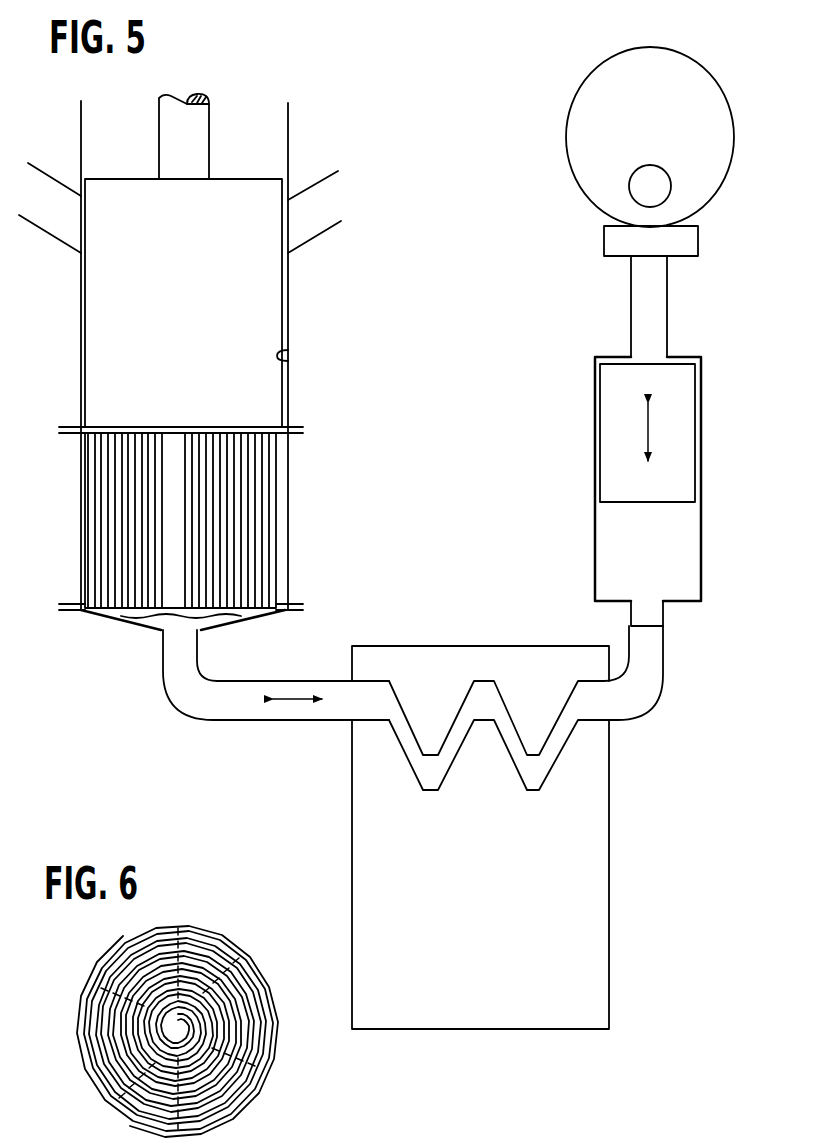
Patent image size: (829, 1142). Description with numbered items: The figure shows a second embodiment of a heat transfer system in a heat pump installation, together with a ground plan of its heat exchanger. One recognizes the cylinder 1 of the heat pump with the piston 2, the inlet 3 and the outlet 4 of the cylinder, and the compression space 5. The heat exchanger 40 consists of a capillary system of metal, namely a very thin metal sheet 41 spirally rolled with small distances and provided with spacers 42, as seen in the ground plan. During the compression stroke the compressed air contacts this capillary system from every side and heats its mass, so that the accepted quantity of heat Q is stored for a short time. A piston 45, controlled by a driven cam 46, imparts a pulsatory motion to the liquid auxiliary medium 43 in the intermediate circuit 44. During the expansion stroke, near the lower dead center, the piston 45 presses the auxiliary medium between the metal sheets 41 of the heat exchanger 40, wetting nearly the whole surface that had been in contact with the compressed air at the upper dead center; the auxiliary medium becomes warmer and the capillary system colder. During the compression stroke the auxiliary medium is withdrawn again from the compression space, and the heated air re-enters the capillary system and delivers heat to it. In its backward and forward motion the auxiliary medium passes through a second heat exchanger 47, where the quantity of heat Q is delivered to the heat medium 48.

In FIG. 5, the cylinder 1 is at (287, 290).
In FIG. 5, the piston 2 is at (190, 300).
In FIG. 5, the inlet 3 is at (50, 218).
In FIG. 5, the outlet 4 is at (315, 217).
In FIG. 5, the compression space 5 is at (287, 357).
In FIG. 5, the heat exchanger 40 is at (297, 507).
In FIG. 6, the heat exchanger 40 is at (247, 922).
In FIG. 5, the metal sheet 41 is at (274, 552).
In FIG. 6, the metal sheet 41 is at (237, 1106).
In FIG. 6, the spacers 42 is at (108, 991).
In FIG. 5, the liquid auxiliary medium 43 is at (650, 612).
In FIG. 5, the intermediate circuit 44 is at (340, 732).
In FIG. 5, the piston 45 is at (608, 443).
In FIG. 5, the driven cam 46 is at (597, 154).
In FIG. 5, the second heat exchanger 47 is at (530, 777).
In FIG. 5, the heat medium 48 is at (585, 968).